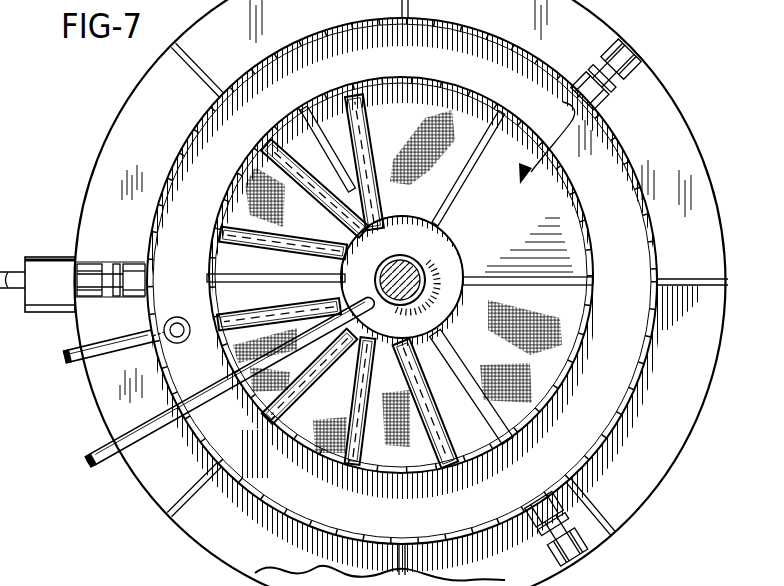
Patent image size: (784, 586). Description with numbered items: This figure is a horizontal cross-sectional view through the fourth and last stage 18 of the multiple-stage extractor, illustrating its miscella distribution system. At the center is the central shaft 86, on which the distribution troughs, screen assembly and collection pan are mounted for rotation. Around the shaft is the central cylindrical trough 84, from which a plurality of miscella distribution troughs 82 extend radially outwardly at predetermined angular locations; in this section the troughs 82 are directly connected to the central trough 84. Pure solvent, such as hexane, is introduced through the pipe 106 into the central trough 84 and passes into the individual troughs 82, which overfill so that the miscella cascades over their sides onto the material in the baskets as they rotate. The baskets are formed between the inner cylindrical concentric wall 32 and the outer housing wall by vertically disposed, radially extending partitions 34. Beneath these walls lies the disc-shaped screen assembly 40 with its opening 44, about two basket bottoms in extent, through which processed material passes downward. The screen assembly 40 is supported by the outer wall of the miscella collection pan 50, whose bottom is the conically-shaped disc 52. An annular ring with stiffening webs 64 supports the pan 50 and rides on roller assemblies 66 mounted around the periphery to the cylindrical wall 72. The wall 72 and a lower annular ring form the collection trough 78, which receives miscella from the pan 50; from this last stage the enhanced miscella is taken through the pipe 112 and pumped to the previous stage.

The last stage 18 is at (195, 125).
The inner cylindrical concentric wall 32 is at (333, 248).
The partitions 34 is at (333, 100).
The screen assembly 40 is at (202, 291).
The opening 44 is at (547, 140).
The miscella collection pan 50 is at (560, 209).
The disc 52 is at (587, 262).
The stiffening webs 64 is at (604, 509).
The roller assemblies 66 is at (91, 272).
The cylindrical wall 72 is at (668, 444).
The collection trough 78 is at (642, 253).
The miscella distribution troughs 82 is at (372, 132).
The central cylindrical trough 84 is at (438, 263).
The central shaft 86 is at (418, 298).
The pipe 106 is at (103, 460).
The pipe 112 is at (77, 368).